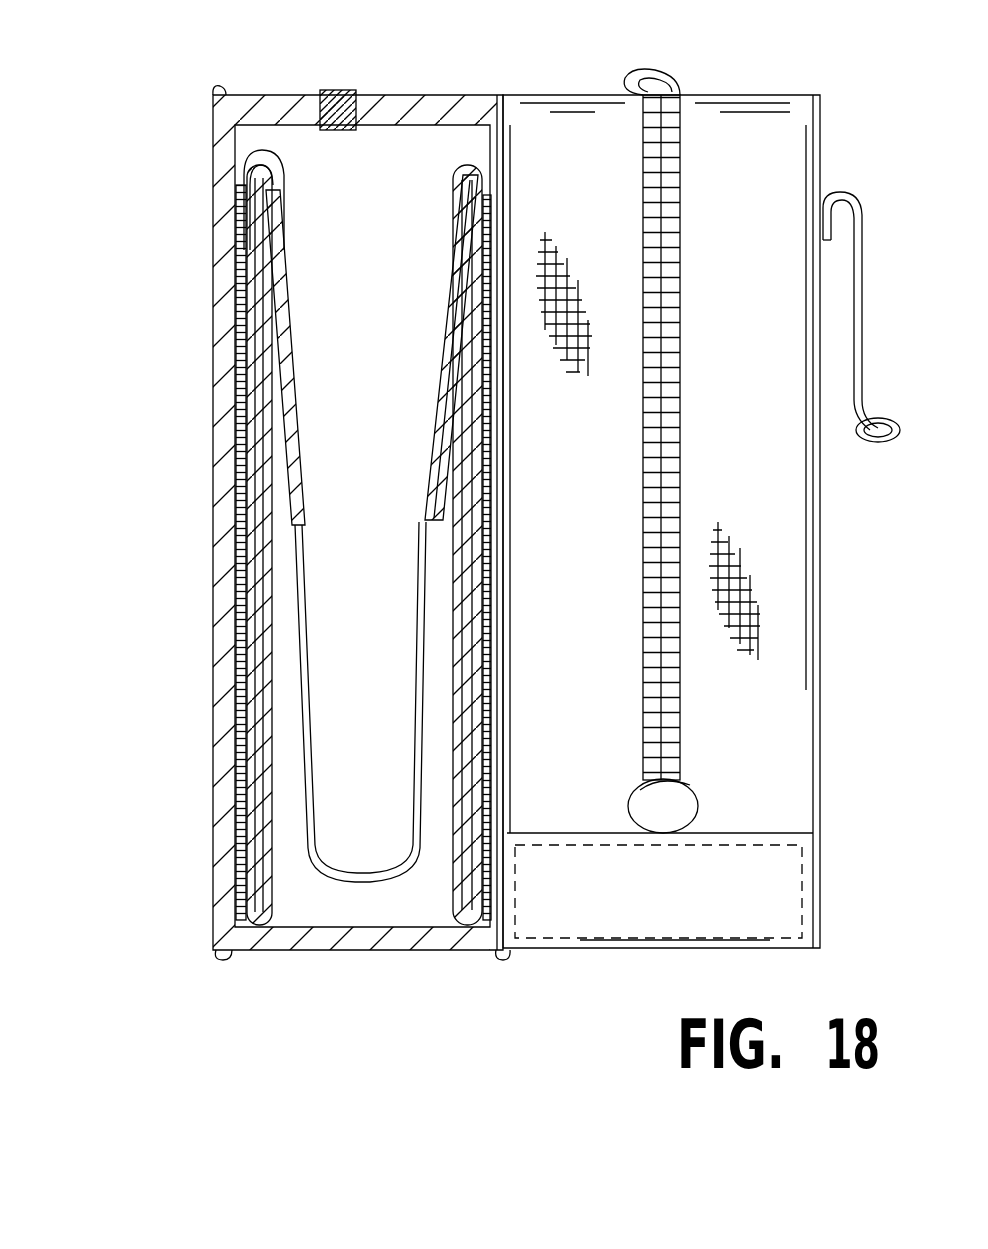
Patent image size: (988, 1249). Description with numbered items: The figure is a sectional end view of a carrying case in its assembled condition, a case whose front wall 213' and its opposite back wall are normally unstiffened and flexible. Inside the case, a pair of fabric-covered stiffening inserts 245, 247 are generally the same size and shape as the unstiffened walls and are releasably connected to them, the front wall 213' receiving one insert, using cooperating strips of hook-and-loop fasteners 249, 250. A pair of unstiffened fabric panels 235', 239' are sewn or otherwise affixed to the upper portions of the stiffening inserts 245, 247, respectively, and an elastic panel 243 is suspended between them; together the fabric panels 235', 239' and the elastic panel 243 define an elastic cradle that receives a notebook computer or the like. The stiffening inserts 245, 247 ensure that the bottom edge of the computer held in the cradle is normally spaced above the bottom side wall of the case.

The front wall 213' is at (298, 523).
The unstiffened fabric panel 235' is at (489, 271).
The unstiffened fabric panel 239' is at (190, 197).
The elastic panel 243 is at (305, 548).
The stiffening insert 245 is at (240, 508).
The stiffening insert 247 is at (485, 888).
The hook-and-loop fasteners 249 is at (258, 215).
The hook-and-loop fasteners 250 is at (240, 190).